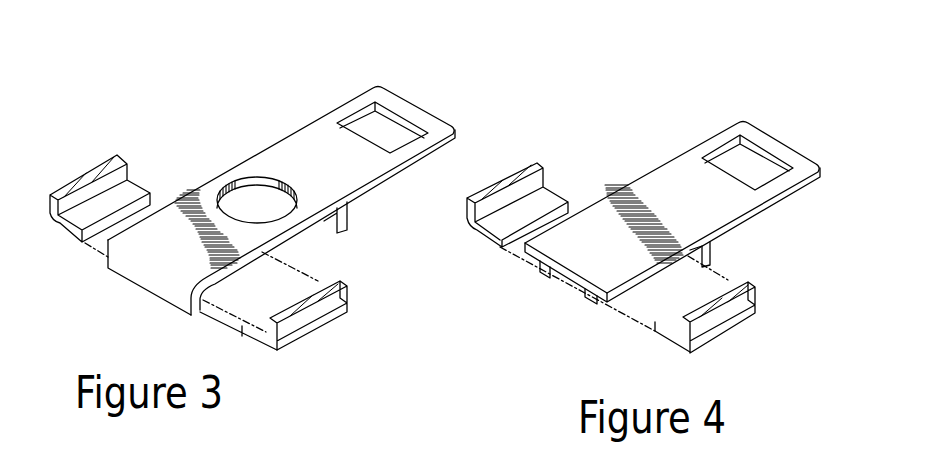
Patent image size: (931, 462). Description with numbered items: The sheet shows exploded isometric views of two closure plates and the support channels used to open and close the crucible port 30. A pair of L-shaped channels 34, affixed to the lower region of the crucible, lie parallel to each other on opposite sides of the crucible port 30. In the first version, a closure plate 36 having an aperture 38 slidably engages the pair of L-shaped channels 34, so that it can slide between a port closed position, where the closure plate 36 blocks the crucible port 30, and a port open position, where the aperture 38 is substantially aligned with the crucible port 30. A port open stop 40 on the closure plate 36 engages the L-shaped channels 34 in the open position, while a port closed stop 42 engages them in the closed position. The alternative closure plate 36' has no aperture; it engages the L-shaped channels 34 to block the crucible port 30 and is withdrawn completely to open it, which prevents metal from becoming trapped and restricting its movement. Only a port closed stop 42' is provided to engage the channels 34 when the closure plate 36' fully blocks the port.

In FIG. 3, the crucible port 30 is at (421, 456).
In FIG. 3, the L-shaped channels 34 is at (87, 177).
In FIG. 4, the L-shaped channels 34 is at (517, 175).
In FIG. 3, the closure plate 36 is at (281, 170).
In FIG. 4, the closure plate 36' is at (672, 174).
In FIG. 3, the aperture 38 is at (247, 193).
In FIG. 3, the port open stop 40 is at (347, 218).
In FIG. 3, the port closed stop 42 is at (180, 295).
In FIG. 4, the port closed stop 42' is at (654, 294).